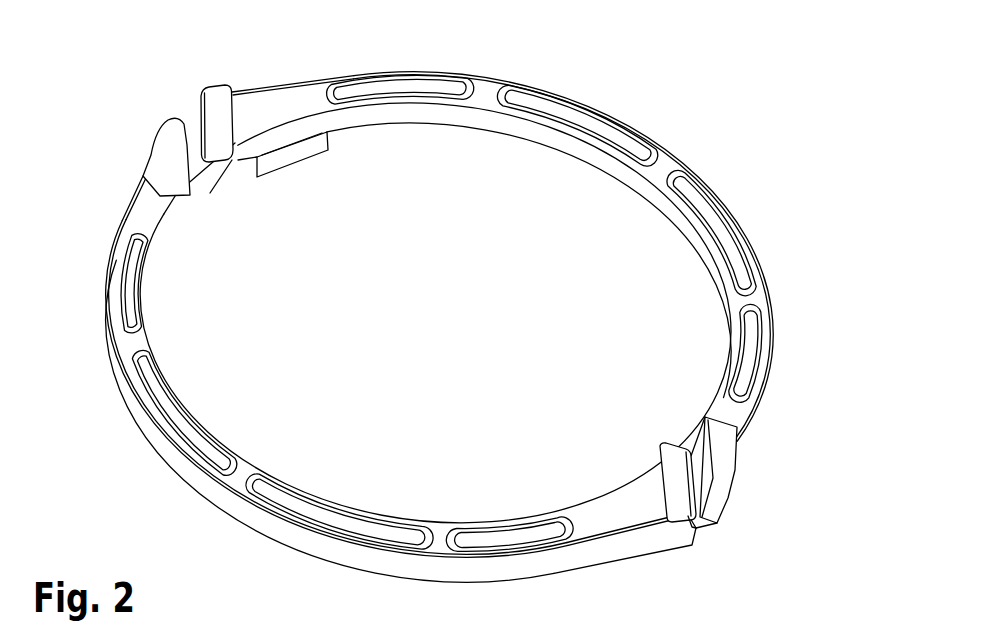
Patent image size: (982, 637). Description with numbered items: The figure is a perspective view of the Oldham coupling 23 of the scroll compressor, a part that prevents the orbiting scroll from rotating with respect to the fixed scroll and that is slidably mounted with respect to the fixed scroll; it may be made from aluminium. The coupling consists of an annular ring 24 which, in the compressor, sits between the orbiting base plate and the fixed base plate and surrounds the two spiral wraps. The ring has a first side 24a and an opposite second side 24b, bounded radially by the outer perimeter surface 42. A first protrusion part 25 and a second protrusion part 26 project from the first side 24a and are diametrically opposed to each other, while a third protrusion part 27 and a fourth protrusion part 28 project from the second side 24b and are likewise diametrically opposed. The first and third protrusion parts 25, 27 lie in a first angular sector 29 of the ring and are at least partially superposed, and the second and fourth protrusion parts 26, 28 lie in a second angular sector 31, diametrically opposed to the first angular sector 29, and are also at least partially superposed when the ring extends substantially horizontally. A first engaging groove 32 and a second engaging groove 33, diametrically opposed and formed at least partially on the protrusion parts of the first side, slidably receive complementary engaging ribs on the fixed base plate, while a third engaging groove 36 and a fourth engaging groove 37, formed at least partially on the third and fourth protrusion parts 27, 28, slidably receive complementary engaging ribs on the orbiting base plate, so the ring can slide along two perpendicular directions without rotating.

The Oldham coupling 23 is at (438, 313).
The annular ring 24 is at (712, 222).
The first side 24a is at (665, 147).
The second side 24b is at (270, 553).
The first protrusion part 25 is at (232, 86).
The second protrusion part 26 is at (658, 466).
The third protrusion part 27 is at (252, 178).
The fourth protrusion part 28 is at (690, 540).
The first angular sector 29 is at (138, 170).
The second angular sector 31 is at (748, 496).
The first engaging groove 32 is at (187, 110).
The second engaging groove 33 is at (688, 432).
The third engaging groove 36 is at (282, 166).
The fourth engaging groove 37 is at (712, 537).
The outer perimeter surface 42 is at (247, 517).